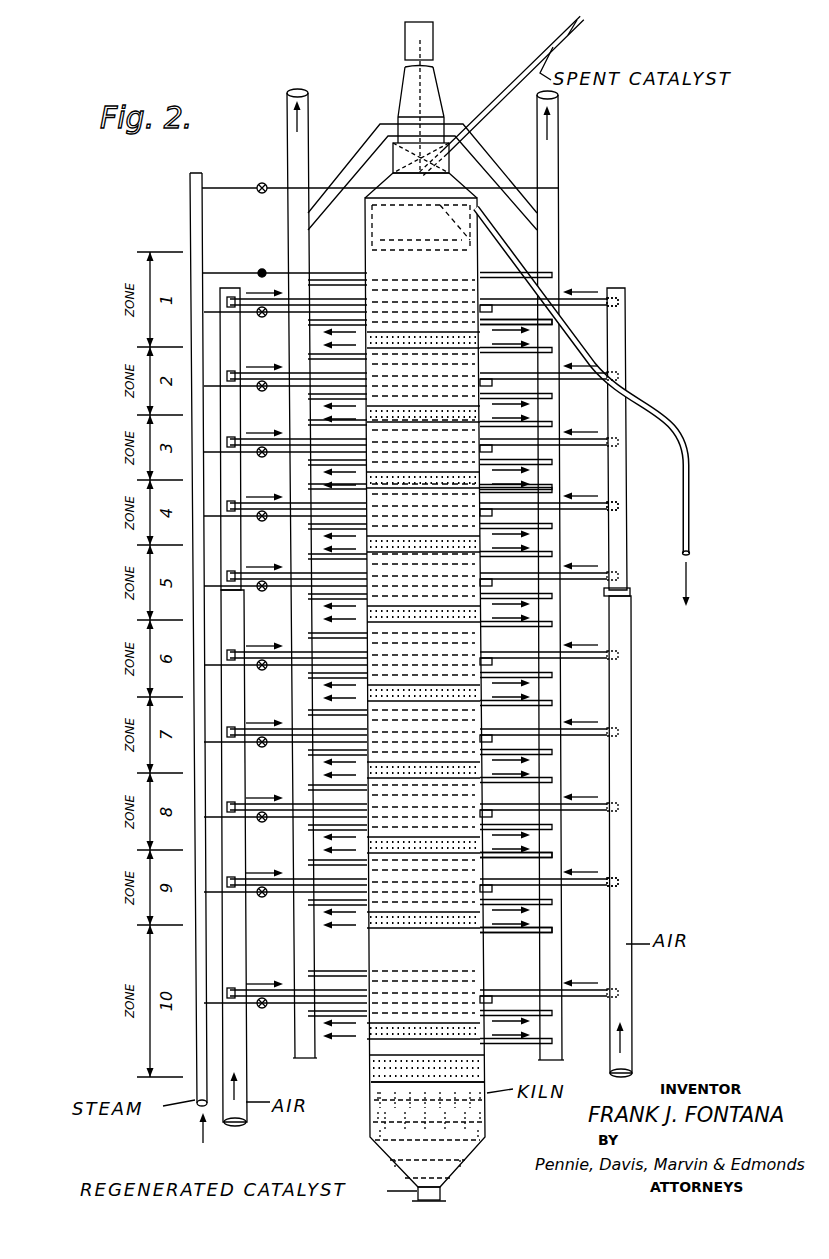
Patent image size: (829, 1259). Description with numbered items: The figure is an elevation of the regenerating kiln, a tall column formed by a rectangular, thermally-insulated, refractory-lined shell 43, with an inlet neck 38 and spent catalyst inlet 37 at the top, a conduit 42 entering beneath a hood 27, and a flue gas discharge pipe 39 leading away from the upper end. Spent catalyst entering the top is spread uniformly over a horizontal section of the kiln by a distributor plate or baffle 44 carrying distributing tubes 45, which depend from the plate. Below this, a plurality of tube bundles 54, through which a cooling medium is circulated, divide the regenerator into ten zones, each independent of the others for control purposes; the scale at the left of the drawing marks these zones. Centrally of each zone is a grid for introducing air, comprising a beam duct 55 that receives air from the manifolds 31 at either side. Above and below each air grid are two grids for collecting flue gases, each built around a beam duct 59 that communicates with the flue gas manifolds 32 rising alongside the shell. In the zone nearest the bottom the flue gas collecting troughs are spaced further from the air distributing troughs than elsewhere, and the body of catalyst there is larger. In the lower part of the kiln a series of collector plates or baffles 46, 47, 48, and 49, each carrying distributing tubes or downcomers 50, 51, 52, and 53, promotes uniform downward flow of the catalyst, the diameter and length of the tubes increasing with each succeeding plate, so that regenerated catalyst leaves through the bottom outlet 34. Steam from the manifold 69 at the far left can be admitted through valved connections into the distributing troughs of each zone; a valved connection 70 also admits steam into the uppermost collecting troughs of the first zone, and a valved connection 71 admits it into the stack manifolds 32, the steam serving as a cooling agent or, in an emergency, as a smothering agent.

The hood 27 is at (480, 221).
The air manifold 31 is at (232, 286).
The flue gas manifold 32 is at (287, 110).
The regenerated catalyst outlet 34 is at (445, 1193).
The spent catalyst inlet 37 is at (438, 38).
The inlet neck 38 is at (399, 95).
The flue gas discharge pipe 39 is at (689, 496).
The spent catalyst conduit 42 is at (501, 96).
The shell 43 is at (399, 227).
The distributor plate 44 is at (421, 227).
The distributing tubes 45 is at (448, 223).
The collector plate 46 is at (373, 1090).
The collector plate 47 is at (373, 1108).
The collector plate 48 is at (373, 1130).
The collector plate 49 is at (371, 1140).
The distributing tubes or downcomers 50 is at (487, 1102).
The distributing tubes or downcomers 51 is at (487, 1118).
The distributing tubes or downcomers 52 is at (486, 1135).
The distributing tubes or downcomers 53 is at (471, 1150).
The tube bundles 54 is at (468, 340).
The beam duct 55 is at (597, 295).
The beam duct 59 is at (551, 276).
The steam manifold 69 is at (199, 1046).
The valved connection 70 is at (272, 271).
The valved connection 71 is at (240, 186).